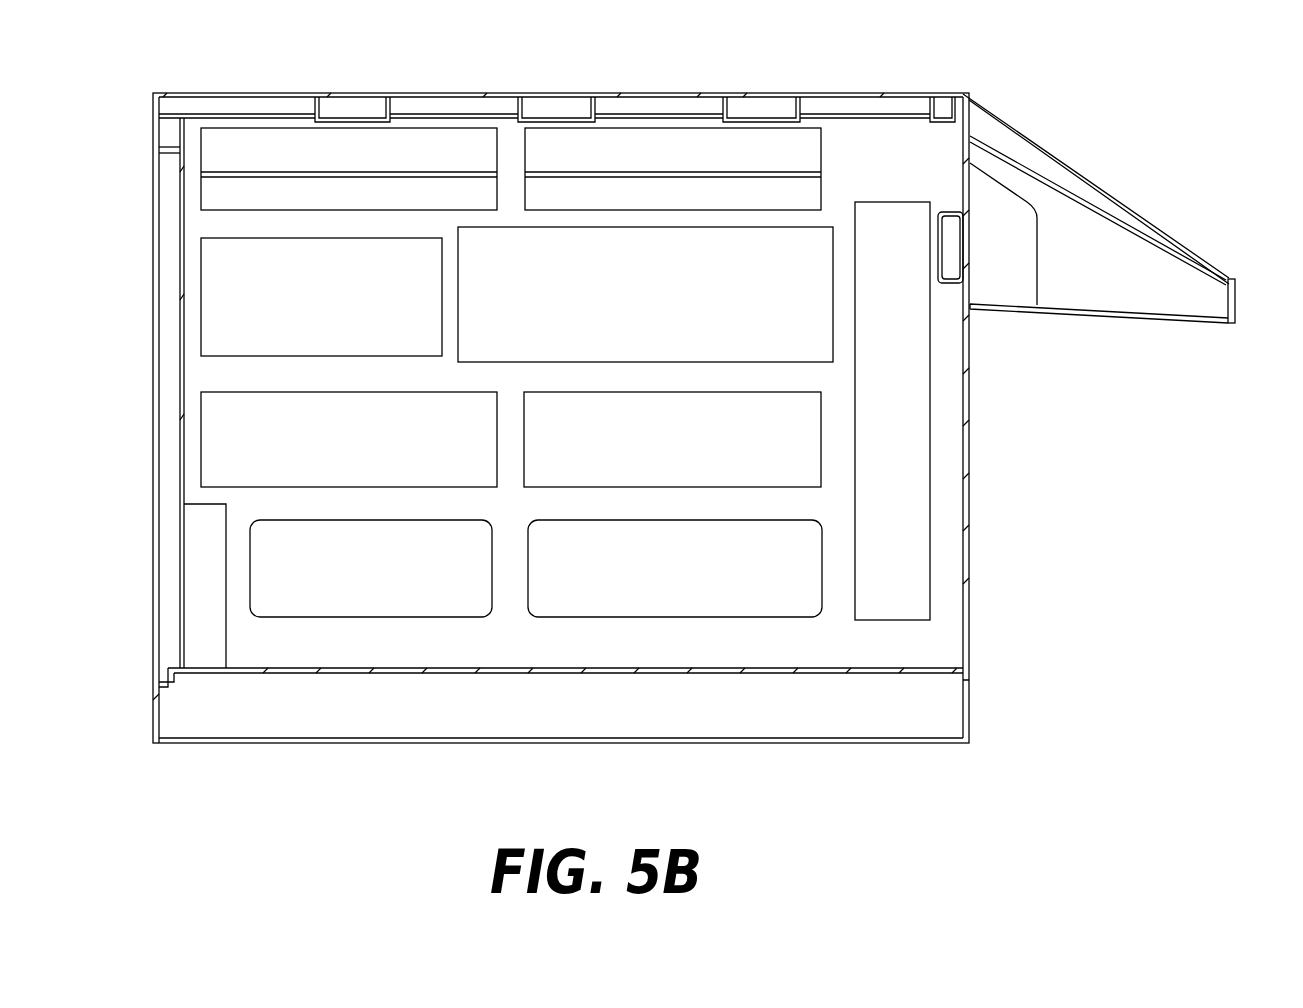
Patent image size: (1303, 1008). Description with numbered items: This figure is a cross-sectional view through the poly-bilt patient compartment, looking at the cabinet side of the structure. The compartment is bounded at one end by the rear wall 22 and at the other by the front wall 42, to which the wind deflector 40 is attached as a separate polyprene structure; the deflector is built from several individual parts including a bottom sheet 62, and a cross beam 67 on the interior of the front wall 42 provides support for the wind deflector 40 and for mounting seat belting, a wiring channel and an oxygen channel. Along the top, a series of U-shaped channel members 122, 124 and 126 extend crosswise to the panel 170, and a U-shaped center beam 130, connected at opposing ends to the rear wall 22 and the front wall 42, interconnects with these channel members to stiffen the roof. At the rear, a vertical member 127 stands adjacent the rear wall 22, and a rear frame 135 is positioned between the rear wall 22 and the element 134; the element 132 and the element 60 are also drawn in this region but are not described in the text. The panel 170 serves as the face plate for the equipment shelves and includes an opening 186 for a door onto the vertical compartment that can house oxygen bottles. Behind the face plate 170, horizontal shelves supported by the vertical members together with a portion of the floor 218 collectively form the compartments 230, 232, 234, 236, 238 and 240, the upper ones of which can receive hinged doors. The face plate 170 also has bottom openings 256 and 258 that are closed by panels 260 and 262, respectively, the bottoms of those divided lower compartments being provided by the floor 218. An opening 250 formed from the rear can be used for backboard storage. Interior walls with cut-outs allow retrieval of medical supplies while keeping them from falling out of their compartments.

The rear wall 22 is at (155, 380).
The wind deflector 40 is at (1224, 261).
The front wall 42 is at (970, 543).
The door edge 60 is at (1237, 295).
The bottom sheet 62 is at (1045, 310).
The cross beam 67 is at (945, 287).
The U-shaped channel member 122 is at (723, 110).
The U-shaped channel member 124 is at (518, 110).
The U-shaped channel member 126 is at (318, 108).
The vertical member 127 is at (165, 443).
The U-shaped center beam 130 is at (204, 110).
The corner slot 132 is at (966, 100).
The inner wall 134 is at (178, 263).
The rear frame 135 is at (170, 148).
The face plate 170 is at (858, 137).
The opening 186 is at (918, 556).
The floor 218 is at (833, 674).
The compartment 230 is at (404, 208).
The compartment 232 is at (646, 208).
The compartment 234 is at (308, 355).
The compartment 236 is at (635, 360).
The compartment 238 is at (355, 487).
The compartment 240 is at (680, 487).
The opening 250 is at (198, 643).
The bottom opening 256 is at (690, 614).
The bottom opening 258 is at (257, 553).
The panel 260 is at (693, 582).
The panel 262 is at (387, 582).